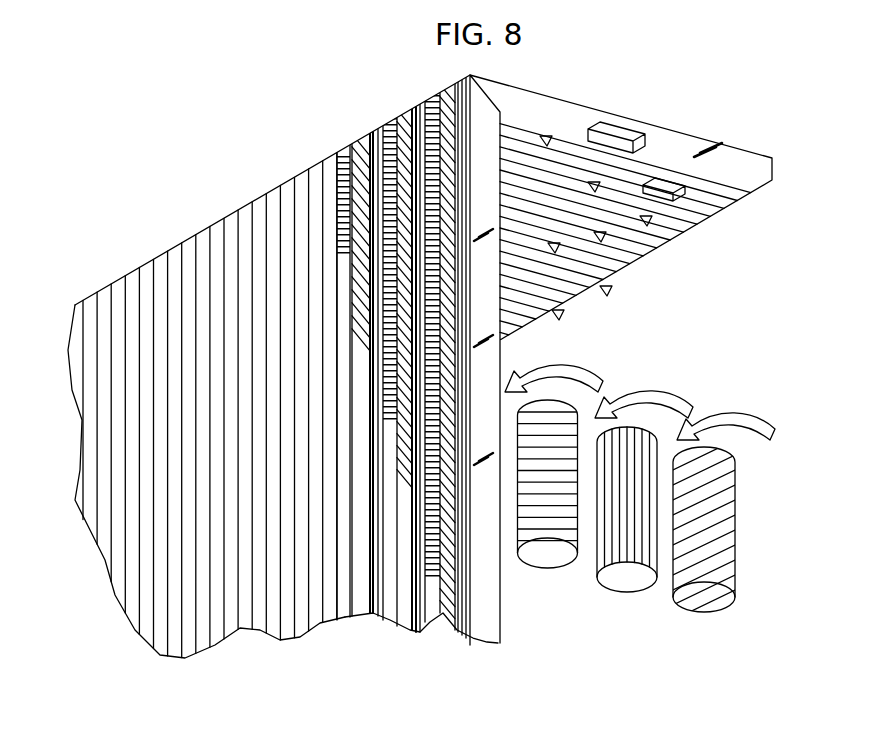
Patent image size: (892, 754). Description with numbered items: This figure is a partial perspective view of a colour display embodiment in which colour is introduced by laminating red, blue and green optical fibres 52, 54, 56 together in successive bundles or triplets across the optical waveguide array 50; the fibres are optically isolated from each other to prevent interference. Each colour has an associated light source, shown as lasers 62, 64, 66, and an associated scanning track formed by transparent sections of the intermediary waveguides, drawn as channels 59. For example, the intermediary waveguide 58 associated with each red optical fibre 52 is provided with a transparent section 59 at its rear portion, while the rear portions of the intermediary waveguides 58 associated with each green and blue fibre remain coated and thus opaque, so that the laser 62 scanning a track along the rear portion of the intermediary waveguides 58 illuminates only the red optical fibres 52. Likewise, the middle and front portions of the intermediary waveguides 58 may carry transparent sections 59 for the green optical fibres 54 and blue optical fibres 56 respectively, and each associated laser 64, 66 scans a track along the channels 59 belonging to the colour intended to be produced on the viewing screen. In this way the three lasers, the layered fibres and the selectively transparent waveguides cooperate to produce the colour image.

The optical waveguide array 50 is at (243, 229).
The red optical fibre 52 is at (445, 357).
The green optical fibre 54 is at (401, 368).
The blue optical fibre 56 is at (357, 374).
The intermediary waveguide 58 is at (534, 110).
The transparent section 59 is at (663, 187).
The laser 62 is at (559, 558).
The laser 64 is at (636, 581).
The laser 66 is at (703, 603).